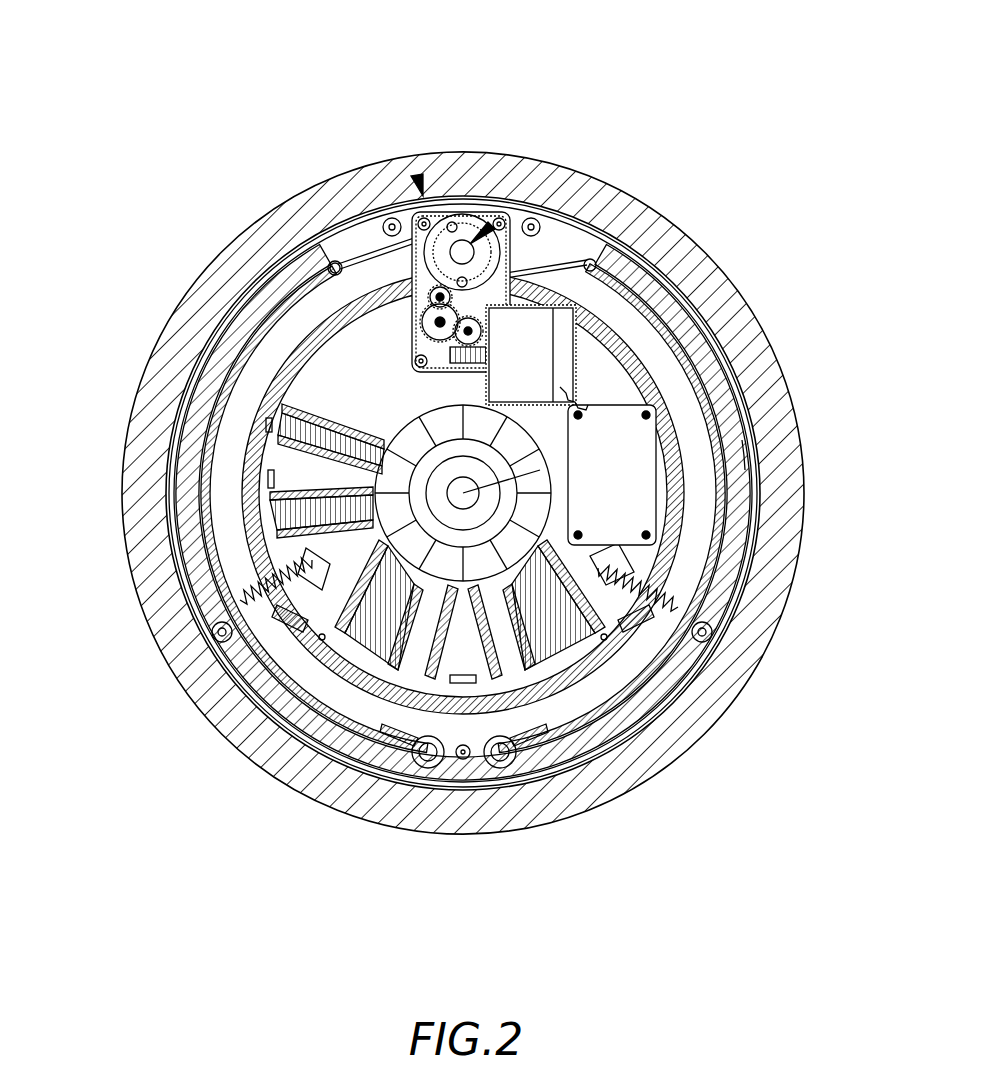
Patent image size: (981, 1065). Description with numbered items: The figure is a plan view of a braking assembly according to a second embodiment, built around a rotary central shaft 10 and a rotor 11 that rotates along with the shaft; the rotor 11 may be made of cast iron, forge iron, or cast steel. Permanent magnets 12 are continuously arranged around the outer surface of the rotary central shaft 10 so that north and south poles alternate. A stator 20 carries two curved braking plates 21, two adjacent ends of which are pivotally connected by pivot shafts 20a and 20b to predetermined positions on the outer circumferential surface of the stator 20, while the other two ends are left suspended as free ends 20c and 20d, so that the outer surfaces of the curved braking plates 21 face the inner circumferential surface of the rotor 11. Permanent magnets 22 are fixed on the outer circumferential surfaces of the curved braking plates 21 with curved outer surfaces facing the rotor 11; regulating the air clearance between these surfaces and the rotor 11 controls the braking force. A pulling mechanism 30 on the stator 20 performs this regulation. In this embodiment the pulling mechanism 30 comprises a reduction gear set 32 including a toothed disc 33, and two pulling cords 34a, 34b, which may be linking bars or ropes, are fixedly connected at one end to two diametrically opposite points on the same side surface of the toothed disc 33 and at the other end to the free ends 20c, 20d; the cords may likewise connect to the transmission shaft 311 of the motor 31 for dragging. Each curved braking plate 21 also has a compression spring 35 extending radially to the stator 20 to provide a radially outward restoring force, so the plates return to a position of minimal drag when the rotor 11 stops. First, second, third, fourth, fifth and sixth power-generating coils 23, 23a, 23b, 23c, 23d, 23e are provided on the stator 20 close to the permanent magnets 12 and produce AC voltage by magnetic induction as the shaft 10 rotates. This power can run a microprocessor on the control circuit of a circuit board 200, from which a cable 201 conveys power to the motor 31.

The rotary central shaft 10 is at (742, 450).
The rotor 11 is at (793, 547).
The permanent magnets 12 is at (405, 420).
The stator 20 is at (252, 545).
The pivot shaft 20a is at (428, 768).
The pivot shaft 20b is at (500, 768).
The free end 20c is at (333, 262).
The free end 20d is at (595, 262).
The curved braking plates 21 is at (315, 718).
The permanent magnets 22 is at (245, 325).
The first power-generating coil 23 is at (565, 645).
The second power-generating coil 23a is at (560, 655).
The third power-generating coil 23b is at (392, 655).
The fourth power-generating coil 23c is at (305, 698).
The fifth power-generating coil 23d is at (258, 520).
The sixth power-generating coil 23e is at (278, 430).
The pulling mechanism 30 is at (422, 188).
The motor 31 is at (665, 305).
The transmission shaft 311 is at (322, 258).
The reduction gear set 32 is at (487, 235).
The toothed disc 33 is at (462, 240).
The pulling cord 34a is at (391, 218).
The pulling cord 34b is at (536, 222).
The compression spring 35 is at (228, 610).
The circuit board 200 is at (640, 486).
The cable 201 is at (717, 370).